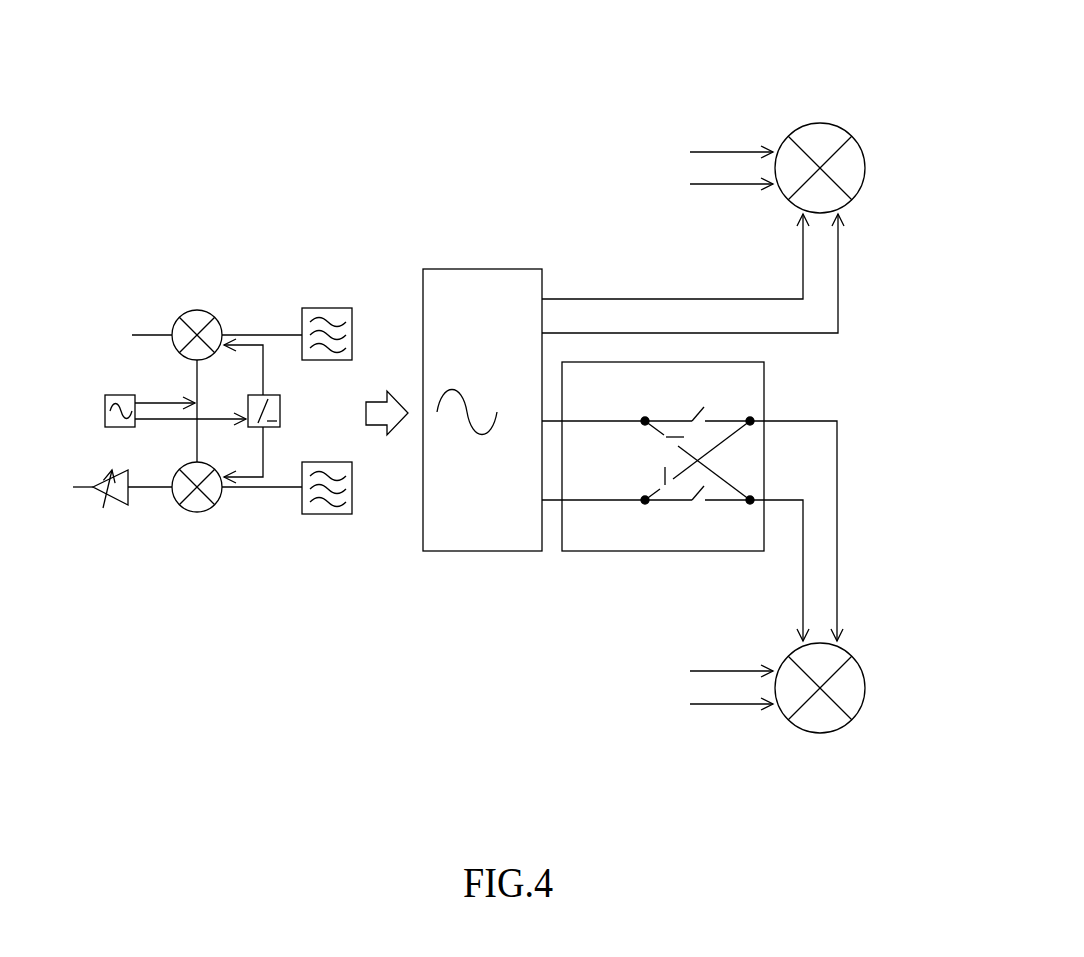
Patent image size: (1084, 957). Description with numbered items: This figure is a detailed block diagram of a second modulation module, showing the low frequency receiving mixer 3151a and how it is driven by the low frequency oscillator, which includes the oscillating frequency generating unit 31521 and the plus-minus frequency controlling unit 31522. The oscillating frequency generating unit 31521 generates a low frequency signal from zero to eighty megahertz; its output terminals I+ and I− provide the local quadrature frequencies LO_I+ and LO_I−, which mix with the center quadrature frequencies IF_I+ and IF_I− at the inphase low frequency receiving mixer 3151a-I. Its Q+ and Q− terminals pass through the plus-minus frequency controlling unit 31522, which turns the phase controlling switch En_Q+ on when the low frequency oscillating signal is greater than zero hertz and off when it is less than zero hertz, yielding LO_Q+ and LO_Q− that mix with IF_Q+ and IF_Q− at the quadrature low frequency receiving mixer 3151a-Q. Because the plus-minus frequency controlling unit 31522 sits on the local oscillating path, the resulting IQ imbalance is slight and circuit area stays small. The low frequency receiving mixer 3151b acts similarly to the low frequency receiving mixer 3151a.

The low frequency receiving mixer 3151a is at (197, 310).
The low frequency receiving mixer 3151b is at (200, 512).
The oscillating frequency generating unit 31521 is at (120, 395).
The plus-minus frequency controlling unit 31522 is at (273, 427).
The inphase low frequency receiving mixer 3151a-I is at (817, 123).
The quadrature low frequency receiving mixer 3151a-Q is at (820, 733).